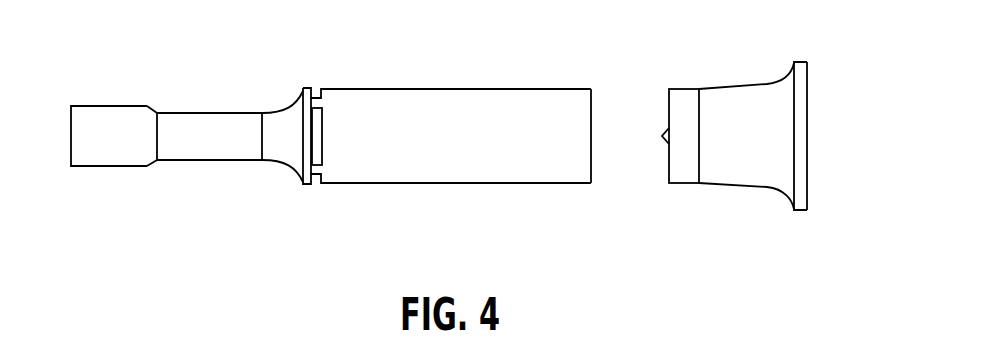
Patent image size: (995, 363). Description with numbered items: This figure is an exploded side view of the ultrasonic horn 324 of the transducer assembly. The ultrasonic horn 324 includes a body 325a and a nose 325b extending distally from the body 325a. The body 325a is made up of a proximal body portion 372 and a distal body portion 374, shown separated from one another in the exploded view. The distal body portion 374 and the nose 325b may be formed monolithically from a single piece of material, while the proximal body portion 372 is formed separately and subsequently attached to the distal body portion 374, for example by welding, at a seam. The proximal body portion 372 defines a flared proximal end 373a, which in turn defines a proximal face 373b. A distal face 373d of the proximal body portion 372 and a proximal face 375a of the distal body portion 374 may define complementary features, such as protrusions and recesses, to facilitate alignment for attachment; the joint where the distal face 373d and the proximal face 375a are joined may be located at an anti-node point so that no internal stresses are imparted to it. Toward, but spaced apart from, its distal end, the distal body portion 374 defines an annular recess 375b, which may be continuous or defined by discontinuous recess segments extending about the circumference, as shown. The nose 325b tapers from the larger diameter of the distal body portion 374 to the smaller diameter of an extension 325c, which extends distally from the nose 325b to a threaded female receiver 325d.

The ultrasonic horn 324 is at (437, 72).
The body 325a is at (658, 62).
The nose 325b is at (283, 118).
The extension 325c is at (218, 147).
The threaded female receiver 325d is at (107, 152).
The proximal body portion 372 is at (747, 175).
The flared proximal end 373a is at (800, 62).
The proximal face 373b is at (808, 135).
The distal face 373d is at (667, 168).
The distal body portion 374 is at (465, 165).
The proximal face 375a is at (592, 100).
The annular recess 375b is at (330, 177).